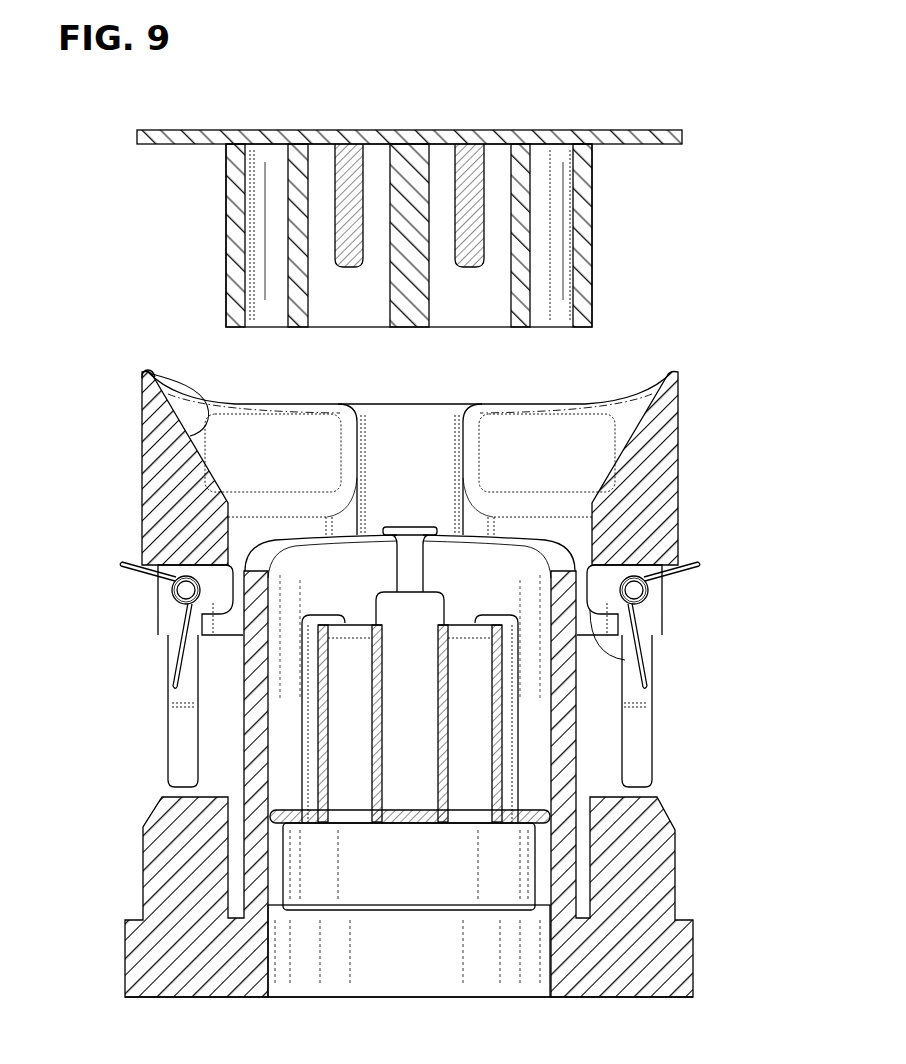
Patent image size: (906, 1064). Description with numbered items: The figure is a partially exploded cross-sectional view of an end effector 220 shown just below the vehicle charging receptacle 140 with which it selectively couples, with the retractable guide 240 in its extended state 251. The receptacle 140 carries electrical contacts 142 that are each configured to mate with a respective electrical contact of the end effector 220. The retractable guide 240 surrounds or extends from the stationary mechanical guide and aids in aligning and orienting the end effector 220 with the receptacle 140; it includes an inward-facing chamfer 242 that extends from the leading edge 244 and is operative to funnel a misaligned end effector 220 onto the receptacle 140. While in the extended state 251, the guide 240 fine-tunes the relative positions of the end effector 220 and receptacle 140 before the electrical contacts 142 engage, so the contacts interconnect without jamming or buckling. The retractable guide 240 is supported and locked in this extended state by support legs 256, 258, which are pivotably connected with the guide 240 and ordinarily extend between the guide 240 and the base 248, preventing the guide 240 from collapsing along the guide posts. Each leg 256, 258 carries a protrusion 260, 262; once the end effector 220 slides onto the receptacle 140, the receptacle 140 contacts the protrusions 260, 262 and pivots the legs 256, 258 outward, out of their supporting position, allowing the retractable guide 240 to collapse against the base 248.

The charging receptacle 140 is at (680, 98).
The electrical contact 142 is at (334, 163).
The end effector 220 is at (694, 390).
The retractable guide 240 is at (142, 462).
The inward-facing chamfer 242 is at (207, 400).
The leading edge 244 is at (146, 370).
The base 248 is at (678, 842).
The extended state 251 is at (82, 414).
The support leg 256 is at (172, 728).
The support leg 258 is at (652, 722).
The protrusion 260 is at (210, 618).
The protrusion 262 is at (640, 658).